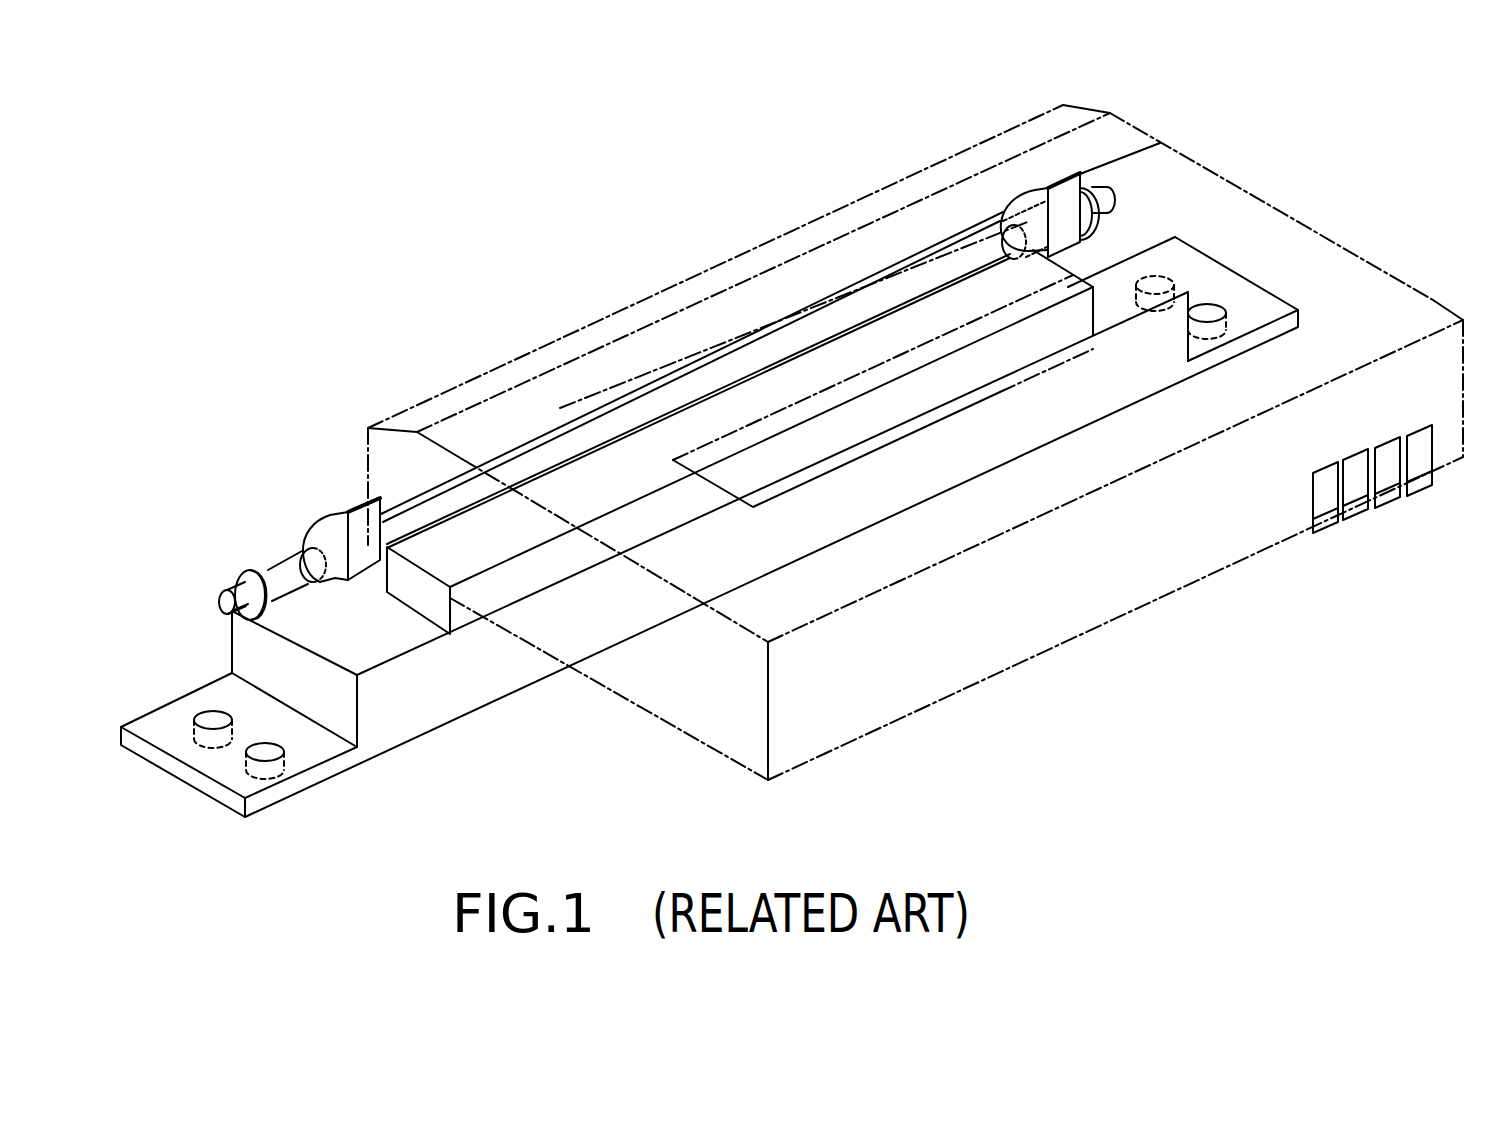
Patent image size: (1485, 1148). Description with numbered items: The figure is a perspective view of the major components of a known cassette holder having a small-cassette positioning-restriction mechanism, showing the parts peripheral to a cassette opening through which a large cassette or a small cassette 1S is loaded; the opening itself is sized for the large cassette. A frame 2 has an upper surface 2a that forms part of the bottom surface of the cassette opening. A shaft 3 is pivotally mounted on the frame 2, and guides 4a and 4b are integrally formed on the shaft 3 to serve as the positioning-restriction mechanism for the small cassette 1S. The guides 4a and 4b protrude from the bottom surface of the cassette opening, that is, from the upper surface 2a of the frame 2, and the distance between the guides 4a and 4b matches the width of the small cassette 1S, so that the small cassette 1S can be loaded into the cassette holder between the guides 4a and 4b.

The small cassette 1S is at (1112, 590).
The frame 2 is at (457, 692).
The upper surface 2a is at (487, 540).
The shaft 3 is at (723, 368).
The guide 4a is at (347, 512).
The guide 4b is at (1047, 188).